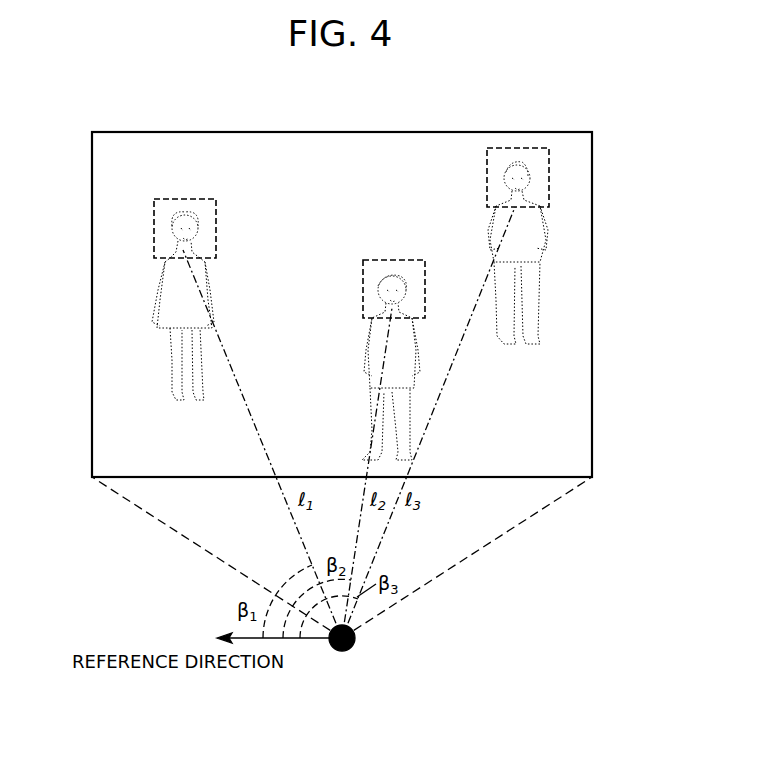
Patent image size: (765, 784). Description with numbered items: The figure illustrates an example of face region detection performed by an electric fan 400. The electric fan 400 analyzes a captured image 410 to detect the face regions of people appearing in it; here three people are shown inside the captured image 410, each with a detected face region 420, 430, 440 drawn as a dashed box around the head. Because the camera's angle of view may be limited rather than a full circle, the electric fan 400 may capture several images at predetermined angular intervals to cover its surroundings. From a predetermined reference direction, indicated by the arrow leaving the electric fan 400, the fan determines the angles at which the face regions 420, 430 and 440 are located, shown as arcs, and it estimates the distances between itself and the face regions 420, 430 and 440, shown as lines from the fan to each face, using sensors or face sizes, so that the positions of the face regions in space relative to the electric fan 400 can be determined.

The electric fan 400 is at (341, 652).
The captured image 410 is at (556, 132).
The face region 420 is at (186, 198).
The face region 430 is at (393, 260).
The face region 440 is at (518, 148).